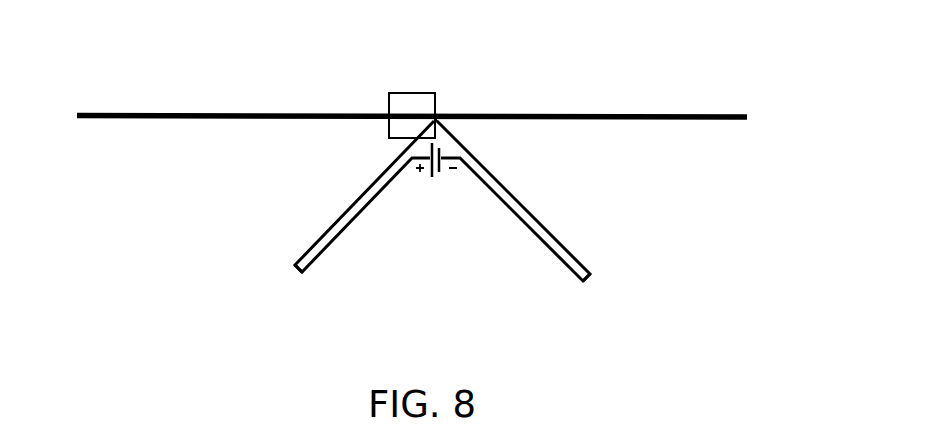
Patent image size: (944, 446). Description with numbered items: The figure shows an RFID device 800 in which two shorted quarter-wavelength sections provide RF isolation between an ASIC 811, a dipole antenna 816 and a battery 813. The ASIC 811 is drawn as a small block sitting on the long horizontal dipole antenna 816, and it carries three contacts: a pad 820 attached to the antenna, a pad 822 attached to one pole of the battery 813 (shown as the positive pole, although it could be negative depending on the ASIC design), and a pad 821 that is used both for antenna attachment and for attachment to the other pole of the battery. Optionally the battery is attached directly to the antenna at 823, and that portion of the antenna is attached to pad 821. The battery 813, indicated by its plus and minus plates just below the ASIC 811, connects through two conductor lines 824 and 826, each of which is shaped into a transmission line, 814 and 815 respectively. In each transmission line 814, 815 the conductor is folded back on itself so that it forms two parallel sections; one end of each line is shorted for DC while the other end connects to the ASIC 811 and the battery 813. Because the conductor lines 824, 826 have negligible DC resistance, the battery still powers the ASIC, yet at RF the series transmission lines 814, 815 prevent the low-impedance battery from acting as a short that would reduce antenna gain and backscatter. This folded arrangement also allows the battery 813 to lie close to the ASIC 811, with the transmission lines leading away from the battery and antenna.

The RFID device 800 is at (150, 322).
The ASIC 811 is at (387, 138).
The battery 813 is at (437, 180).
The transmission line 814 is at (530, 231).
The transmission line 815 is at (334, 228).
The dipole antenna 816 is at (483, 112).
The pad 820 is at (389, 111).
The pad 821 is at (437, 109).
The pad 822 is at (438, 122).
The battery-to-antenna attachment 823 is at (436, 120).
The conductor line 824 is at (564, 264).
The conductor line 826 is at (317, 262).